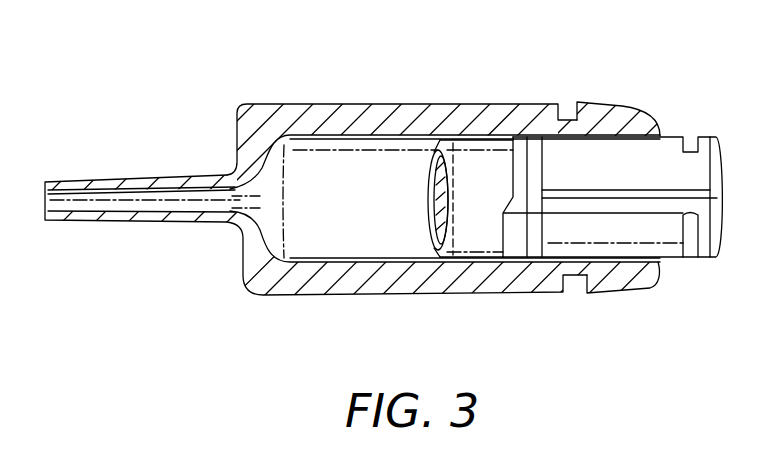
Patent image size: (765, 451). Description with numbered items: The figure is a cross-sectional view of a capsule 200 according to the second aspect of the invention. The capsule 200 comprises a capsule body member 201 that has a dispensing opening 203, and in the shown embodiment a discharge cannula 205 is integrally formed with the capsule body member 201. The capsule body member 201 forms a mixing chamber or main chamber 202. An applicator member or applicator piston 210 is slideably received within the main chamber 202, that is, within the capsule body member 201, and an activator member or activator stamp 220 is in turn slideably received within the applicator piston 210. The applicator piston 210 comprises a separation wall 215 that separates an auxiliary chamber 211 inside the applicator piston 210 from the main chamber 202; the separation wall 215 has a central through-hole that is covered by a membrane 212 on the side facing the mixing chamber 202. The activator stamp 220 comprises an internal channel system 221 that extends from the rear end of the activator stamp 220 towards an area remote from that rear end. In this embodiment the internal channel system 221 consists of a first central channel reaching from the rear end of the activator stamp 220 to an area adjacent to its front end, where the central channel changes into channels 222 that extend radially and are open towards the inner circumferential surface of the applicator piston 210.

The capsule 200 is at (212, 305).
The capsule body member 201 is at (286, 296).
The main chamber 202 is at (332, 163).
The dispensing opening 203 is at (237, 190).
The discharge cannula 205 is at (102, 221).
The applicator piston 210 is at (474, 128).
The auxiliary chamber 211 is at (482, 237).
The membrane 212 is at (433, 192).
The separation wall 215 is at (443, 224).
The activator stamp 220 is at (627, 155).
The internal channel system 221 is at (677, 192).
The channels 222 is at (537, 172).